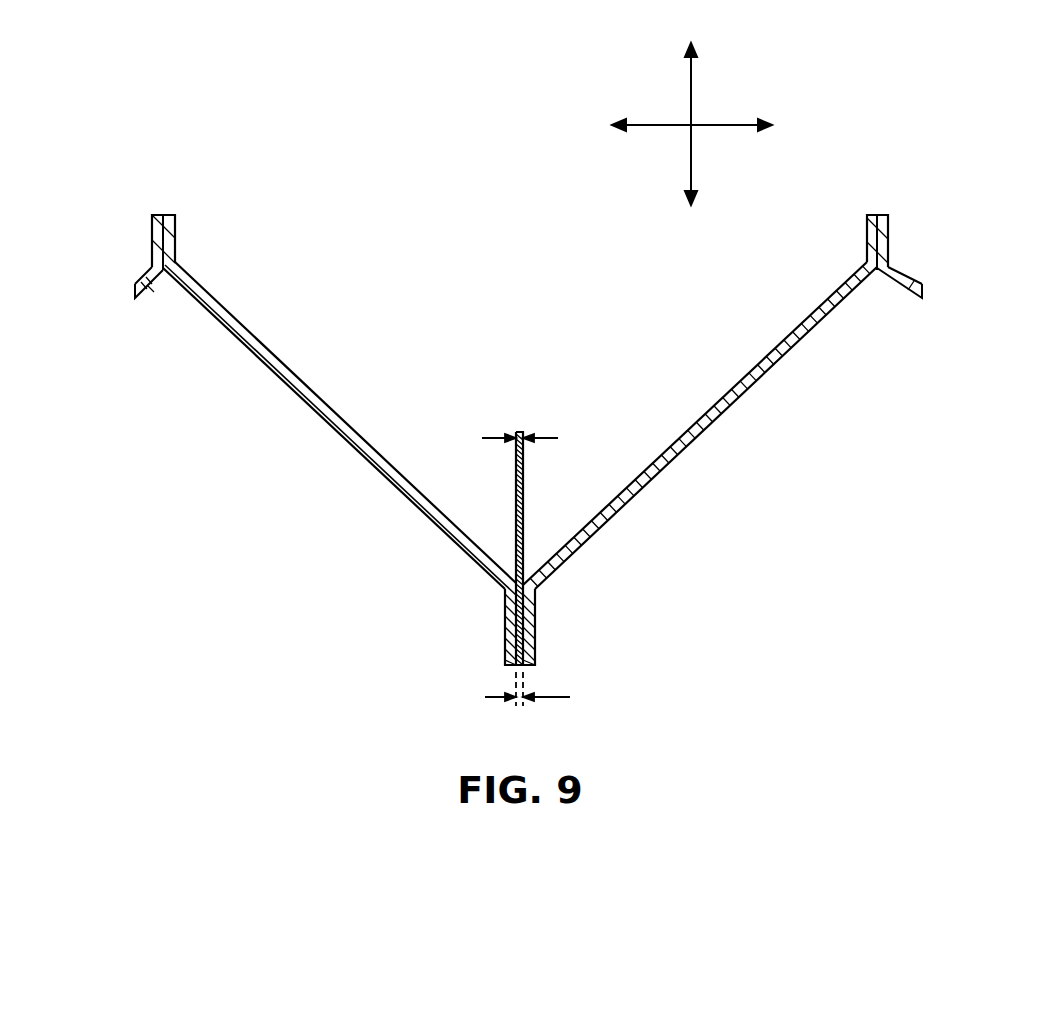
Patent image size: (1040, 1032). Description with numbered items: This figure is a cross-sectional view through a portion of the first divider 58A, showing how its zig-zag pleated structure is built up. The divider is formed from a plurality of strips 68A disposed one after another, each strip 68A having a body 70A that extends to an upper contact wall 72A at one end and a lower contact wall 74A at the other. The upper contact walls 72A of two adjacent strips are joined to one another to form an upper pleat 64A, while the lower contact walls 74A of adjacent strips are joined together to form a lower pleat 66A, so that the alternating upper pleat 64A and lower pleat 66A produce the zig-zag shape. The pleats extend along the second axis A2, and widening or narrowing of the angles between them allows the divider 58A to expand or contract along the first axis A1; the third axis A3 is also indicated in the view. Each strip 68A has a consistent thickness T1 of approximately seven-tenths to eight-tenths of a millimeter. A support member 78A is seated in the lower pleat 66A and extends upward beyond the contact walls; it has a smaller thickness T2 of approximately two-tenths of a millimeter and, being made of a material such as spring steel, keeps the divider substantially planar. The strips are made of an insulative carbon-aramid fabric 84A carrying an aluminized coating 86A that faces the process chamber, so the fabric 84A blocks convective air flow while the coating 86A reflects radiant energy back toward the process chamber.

The first divider 58A is at (203, 292).
The upper pleat 64A is at (163, 215).
The lower pleat 66A is at (512, 665).
The strip 68A is at (136, 283).
The body 70A is at (278, 373).
The upper contact wall 72A is at (153, 237).
The lower contact wall 74A is at (510, 622).
The support member 78A is at (525, 482).
The carbon-aramid fabric 84A is at (143, 273).
The aluminized coating 86A is at (150, 276).
The thickness of the strips T1 is at (550, 702).
The thickness of the support member T2 is at (530, 433).
The first axis A1 is at (745, 122).
The second axis A2 is at (691, 125).
The third axis A3 is at (691, 70).